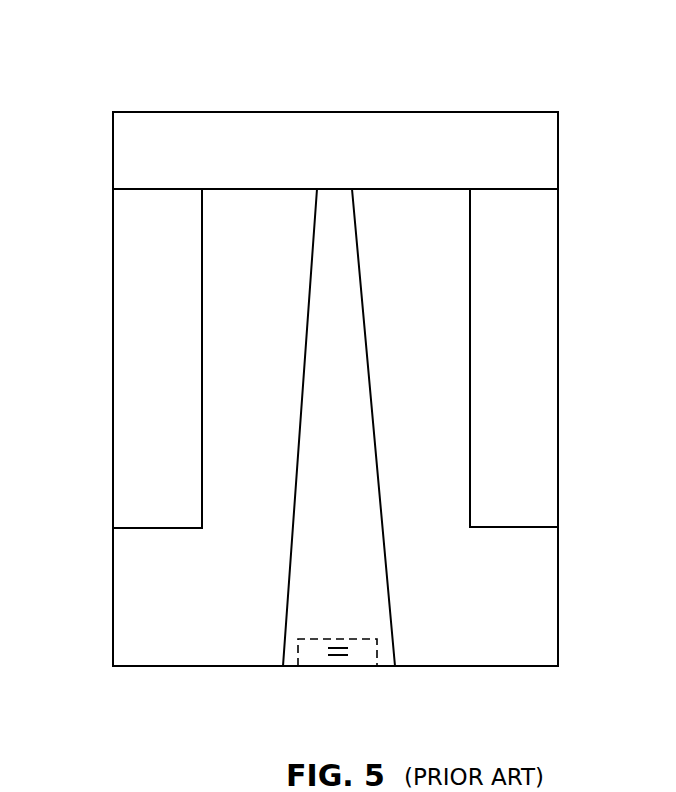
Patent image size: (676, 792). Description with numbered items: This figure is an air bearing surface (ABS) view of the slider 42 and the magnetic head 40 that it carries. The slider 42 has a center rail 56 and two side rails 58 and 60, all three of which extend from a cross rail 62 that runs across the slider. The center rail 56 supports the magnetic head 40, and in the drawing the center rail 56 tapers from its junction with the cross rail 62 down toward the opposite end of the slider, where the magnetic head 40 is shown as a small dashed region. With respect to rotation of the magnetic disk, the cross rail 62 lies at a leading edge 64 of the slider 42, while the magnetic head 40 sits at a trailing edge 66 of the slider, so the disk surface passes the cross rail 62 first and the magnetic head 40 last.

The magnetic head 40 is at (316, 667).
The slider 42 is at (113, 614).
The center rail 56 is at (320, 303).
The side rail 58 is at (128, 272).
The side rail 60 is at (541, 271).
The cross rail 62 is at (257, 124).
The leading edge 64 is at (432, 112).
The trailing edge 66 is at (458, 667).